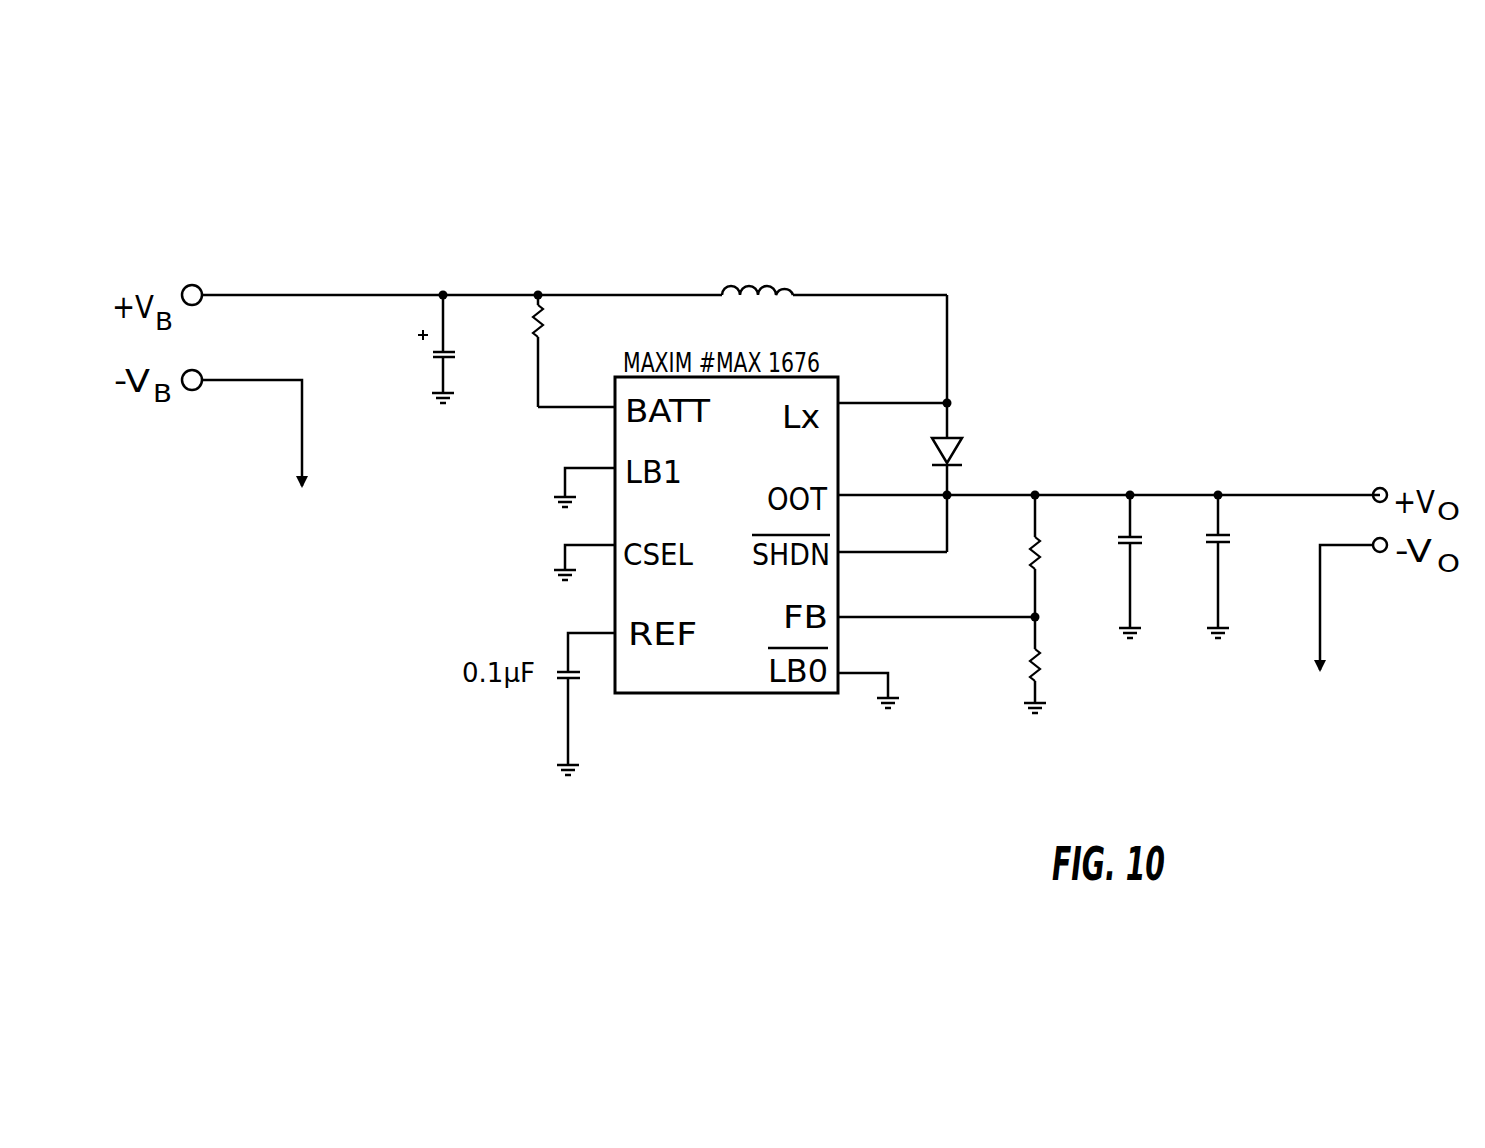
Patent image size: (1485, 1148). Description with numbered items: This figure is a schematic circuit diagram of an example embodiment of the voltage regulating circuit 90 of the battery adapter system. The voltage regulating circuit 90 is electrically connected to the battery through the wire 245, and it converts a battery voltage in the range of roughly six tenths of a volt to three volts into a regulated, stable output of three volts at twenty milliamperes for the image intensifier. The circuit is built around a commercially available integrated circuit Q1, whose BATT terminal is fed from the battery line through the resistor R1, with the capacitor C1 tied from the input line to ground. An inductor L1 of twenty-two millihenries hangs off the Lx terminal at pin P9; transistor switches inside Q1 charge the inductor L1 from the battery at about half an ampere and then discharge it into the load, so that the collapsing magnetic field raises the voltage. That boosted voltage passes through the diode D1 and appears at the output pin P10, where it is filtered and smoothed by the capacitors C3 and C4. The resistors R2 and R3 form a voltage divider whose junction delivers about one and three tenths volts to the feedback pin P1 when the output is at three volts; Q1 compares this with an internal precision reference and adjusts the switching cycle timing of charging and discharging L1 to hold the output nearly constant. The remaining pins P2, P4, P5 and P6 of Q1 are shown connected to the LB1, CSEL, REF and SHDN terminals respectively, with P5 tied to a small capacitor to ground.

The voltage regulating circuit 90 is at (366, 178).
The wire 245 is at (227, 293).
The feedback pin P1 is at (908, 616).
The pin P2 is at (593, 467).
The pin P4 is at (597, 544).
The pin P5 is at (588, 632).
The pin P6 is at (915, 551).
The pin P9 is at (915, 402).
The output pin P10 is at (925, 494).
The integrated circuit Q1 is at (740, 524).
The resistor R1 is at (541, 331).
The resistor R2 is at (1040, 570).
The resistor R3 is at (1042, 670).
The capacitor C1 is at (447, 357).
The capacitor C3 is at (1133, 546).
The capacitor C4 is at (1222, 546).
The inductor L1 is at (790, 283).
The diode D1 is at (955, 441).